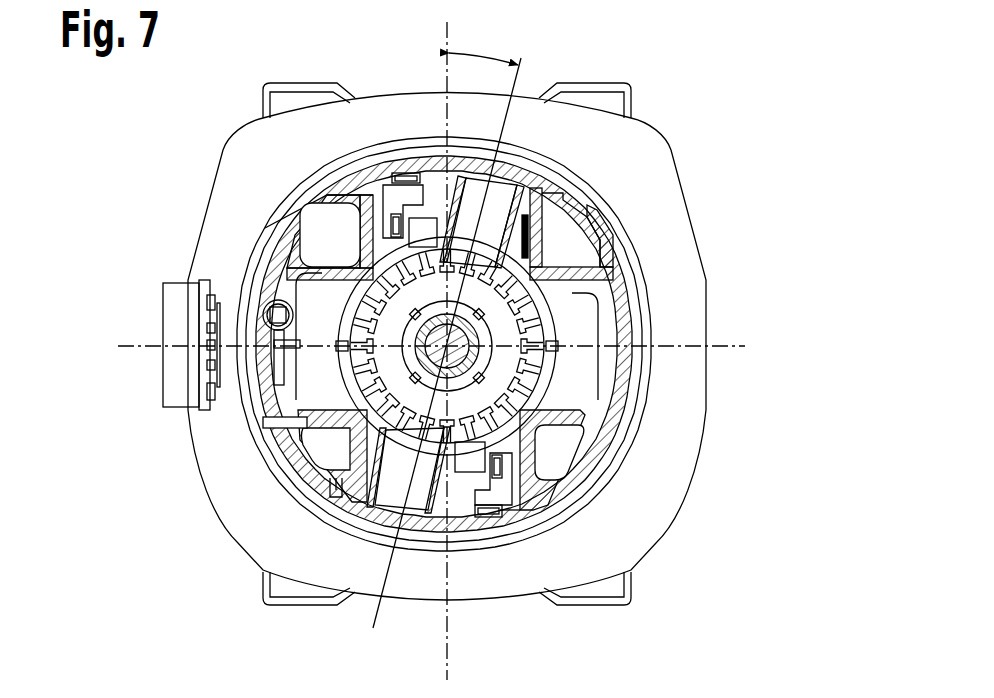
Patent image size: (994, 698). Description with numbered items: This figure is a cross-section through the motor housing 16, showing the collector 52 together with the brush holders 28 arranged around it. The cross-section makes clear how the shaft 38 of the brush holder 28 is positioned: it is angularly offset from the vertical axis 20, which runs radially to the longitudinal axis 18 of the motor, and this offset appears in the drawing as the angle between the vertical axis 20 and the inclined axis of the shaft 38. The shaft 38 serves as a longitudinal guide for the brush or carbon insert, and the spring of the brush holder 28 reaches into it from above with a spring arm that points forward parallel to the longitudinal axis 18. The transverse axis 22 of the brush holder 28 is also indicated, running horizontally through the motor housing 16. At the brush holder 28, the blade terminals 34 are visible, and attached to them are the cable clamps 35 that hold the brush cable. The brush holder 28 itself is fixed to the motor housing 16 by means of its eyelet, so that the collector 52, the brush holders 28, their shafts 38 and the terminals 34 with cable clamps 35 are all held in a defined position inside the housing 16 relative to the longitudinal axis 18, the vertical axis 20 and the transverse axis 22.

The motor housing 16 is at (652, 220).
The longitudinal axis 18 is at (395, 380).
The vertical axis 20 is at (445, 68).
The transverse axis 22 is at (722, 345).
The brush holder 28 is at (532, 172).
The blade terminals 34 is at (383, 210).
The cable clamps 35 is at (403, 175).
The shaft 38 is at (543, 188).
The collector 52 is at (533, 327).